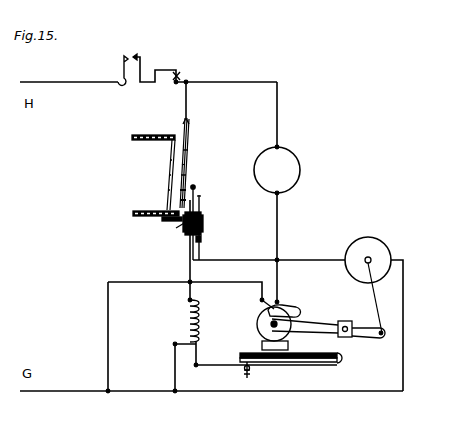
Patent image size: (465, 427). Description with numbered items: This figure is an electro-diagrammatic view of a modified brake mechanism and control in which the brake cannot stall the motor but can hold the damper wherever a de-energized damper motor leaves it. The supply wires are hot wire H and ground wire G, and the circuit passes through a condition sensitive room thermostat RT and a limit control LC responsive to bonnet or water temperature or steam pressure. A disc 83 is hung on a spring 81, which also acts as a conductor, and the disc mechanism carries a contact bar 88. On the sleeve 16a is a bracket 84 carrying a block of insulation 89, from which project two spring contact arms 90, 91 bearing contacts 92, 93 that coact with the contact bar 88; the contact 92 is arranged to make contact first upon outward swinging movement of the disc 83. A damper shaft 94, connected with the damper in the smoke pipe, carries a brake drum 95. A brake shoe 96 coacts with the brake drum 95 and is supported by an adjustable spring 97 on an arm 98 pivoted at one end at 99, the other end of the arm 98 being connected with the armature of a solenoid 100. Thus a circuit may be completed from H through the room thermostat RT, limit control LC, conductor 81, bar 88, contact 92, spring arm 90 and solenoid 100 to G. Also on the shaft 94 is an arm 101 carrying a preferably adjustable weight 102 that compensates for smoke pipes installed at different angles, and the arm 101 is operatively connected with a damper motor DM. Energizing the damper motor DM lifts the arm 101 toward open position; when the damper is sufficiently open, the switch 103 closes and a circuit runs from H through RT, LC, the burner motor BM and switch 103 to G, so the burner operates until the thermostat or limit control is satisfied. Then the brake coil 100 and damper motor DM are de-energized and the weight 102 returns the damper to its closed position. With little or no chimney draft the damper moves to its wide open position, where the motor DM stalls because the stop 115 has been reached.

The room thermostat RT is at (122, 62).
The limit control LC is at (177, 76).
The burner motor BM is at (277, 171).
The damper motor DM is at (386, 250).
The spring 81 is at (186, 128).
The disc 83 is at (168, 160).
The sleeve 16a is at (141, 212).
The bracket 84 is at (172, 222).
The contact bar 88 is at (183, 195).
The block of insulation 89 is at (200, 237).
The spring contact arm 90 is at (203, 217).
The spring contact arm 91 is at (202, 204).
The contact 92 is at (188, 218).
The contact 93 is at (195, 187).
The damper shaft 94 is at (262, 330).
The brake drum 95 is at (262, 322).
The brake shoe 96 is at (290, 348).
The adjustable spring 97 is at (305, 362).
The arm 98 is at (258, 364).
The pivot 99 is at (341, 362).
The solenoid 100 is at (190, 333).
The arm 101 is at (360, 333).
The weight 102 is at (335, 311).
The switch 103 is at (284, 308).
The stop 115 is at (333, 298).